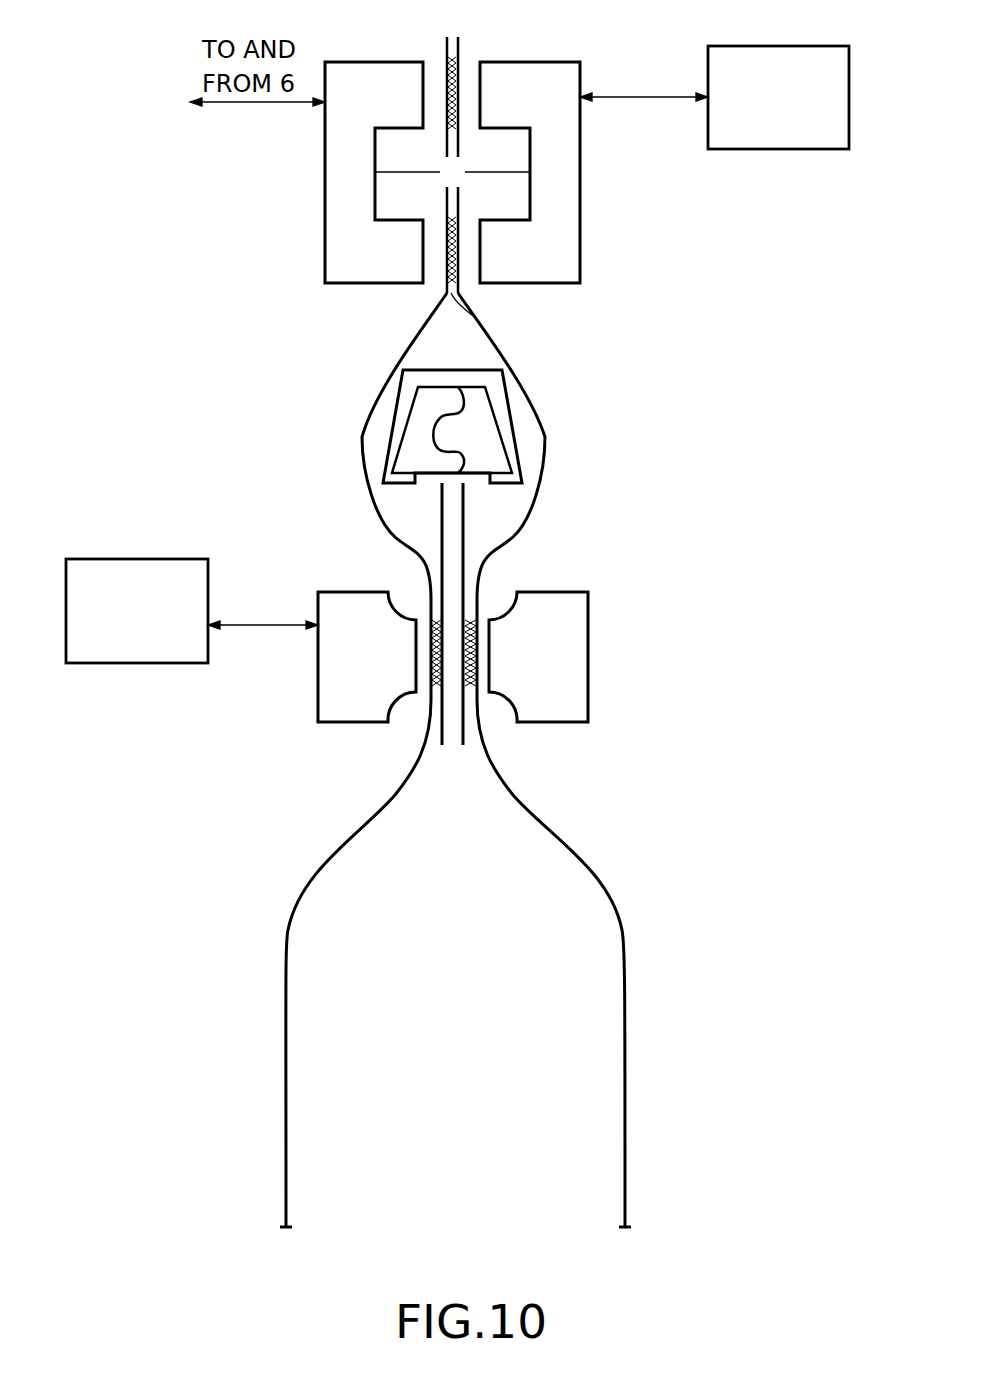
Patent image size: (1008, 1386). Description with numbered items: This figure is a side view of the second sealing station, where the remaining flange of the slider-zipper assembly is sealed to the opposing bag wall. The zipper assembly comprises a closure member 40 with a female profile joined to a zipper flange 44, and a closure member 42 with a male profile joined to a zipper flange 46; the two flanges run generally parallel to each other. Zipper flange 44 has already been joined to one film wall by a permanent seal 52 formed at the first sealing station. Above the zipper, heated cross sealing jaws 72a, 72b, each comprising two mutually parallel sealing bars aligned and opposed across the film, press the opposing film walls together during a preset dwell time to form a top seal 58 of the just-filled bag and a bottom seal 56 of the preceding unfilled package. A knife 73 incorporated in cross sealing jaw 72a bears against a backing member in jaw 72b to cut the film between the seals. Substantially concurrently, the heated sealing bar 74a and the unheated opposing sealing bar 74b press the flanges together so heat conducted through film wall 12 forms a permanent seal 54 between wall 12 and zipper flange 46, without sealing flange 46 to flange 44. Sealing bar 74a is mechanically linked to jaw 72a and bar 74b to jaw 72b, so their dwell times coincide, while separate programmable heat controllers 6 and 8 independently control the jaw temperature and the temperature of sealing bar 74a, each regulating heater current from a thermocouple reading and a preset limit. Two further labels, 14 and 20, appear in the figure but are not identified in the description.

The programmable heat controller 6 is at (852, 98).
The programmable heat controller 8 is at (138, 663).
The wall of bag making film 12 is at (286, 1058).
The second outer tube leg 14 is at (625, 1068).
The glass envelope bulb 20 is at (517, 413).
The closure member 40 is at (405, 462).
The closure member 42 is at (490, 435).
The zipper flange 44 is at (463, 728).
The zipper flange 46 is at (440, 728).
The permanent seal 52 is at (468, 617).
The permanent seal 54 is at (438, 617).
The bottom seal 56 is at (453, 57).
The top seal 58 is at (474, 317).
The cross sealing jaw 72a is at (325, 267).
The cross sealing jaw 72b is at (580, 170).
The knife 73 is at (400, 172).
The sealing bar 74a is at (318, 702).
The sealing bar 74b is at (588, 668).